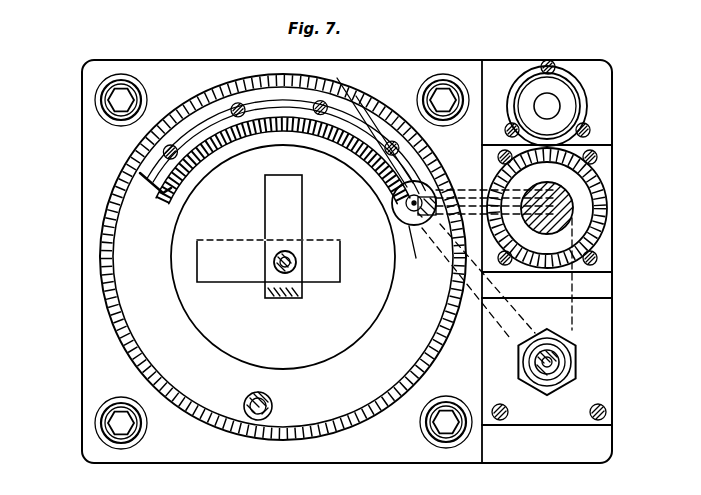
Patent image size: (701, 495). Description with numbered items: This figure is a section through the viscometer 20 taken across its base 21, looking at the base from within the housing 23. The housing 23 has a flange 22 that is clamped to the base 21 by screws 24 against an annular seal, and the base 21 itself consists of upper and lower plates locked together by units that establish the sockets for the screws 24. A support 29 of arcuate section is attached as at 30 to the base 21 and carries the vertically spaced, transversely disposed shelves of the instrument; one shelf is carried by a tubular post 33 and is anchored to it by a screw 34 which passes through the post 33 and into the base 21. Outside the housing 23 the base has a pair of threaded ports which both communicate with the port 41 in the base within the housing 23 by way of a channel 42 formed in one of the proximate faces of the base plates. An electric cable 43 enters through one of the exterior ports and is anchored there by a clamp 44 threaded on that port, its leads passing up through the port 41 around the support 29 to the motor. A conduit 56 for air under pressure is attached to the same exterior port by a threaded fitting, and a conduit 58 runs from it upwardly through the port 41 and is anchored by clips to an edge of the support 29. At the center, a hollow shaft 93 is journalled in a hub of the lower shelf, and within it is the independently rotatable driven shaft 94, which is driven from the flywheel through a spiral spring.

The viscometer 20 is at (95, 299).
The base 21 is at (80, 369).
The flange 22 is at (88, 153).
The housing 23 is at (103, 241).
The screws 24 is at (121, 98).
The support 29 is at (272, 168).
The attachment of support to base 30 is at (345, 84).
The tubular post 33 is at (273, 406).
The screw 34 is at (246, 402).
The port 41 is at (423, 251).
The channel 42 is at (464, 186).
The electric cable 43 is at (579, 204).
The clamp 44 is at (599, 226).
The conduit 56 is at (571, 358).
The conduit 58 is at (404, 216).
The hollow shaft 93 is at (293, 256).
The driven shaft 94 is at (277, 272).